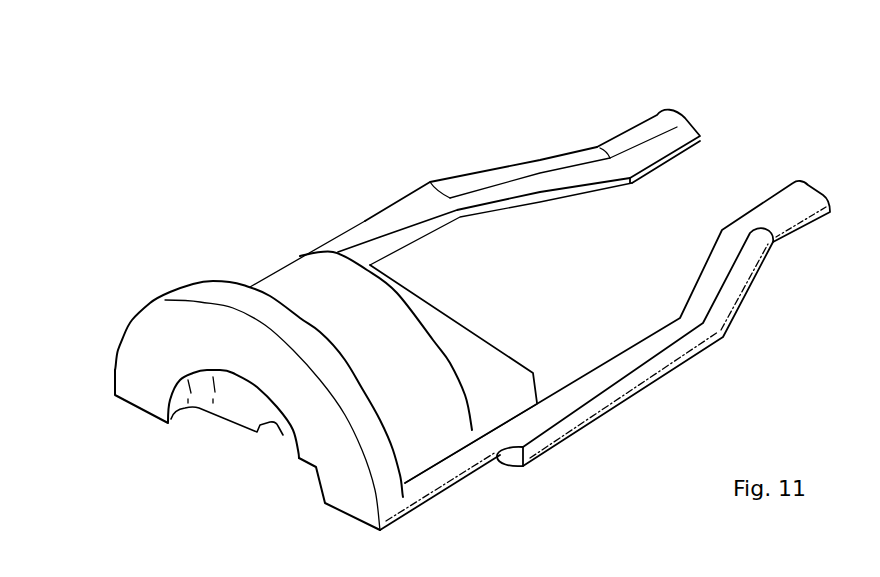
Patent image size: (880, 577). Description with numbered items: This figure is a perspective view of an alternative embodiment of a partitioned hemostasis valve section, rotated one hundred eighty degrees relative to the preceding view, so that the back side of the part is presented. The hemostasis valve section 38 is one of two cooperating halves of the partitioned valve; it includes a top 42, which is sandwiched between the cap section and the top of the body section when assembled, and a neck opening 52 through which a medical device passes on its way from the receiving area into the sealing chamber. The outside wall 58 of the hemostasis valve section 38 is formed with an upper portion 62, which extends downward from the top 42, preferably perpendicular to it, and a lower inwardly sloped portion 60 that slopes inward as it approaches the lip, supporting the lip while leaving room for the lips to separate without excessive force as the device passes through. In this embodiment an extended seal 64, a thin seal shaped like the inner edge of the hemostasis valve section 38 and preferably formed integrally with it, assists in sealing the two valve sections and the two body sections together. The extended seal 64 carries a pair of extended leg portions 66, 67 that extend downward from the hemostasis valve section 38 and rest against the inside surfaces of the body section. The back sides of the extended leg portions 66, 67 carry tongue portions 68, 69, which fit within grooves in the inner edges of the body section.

The hemostasis valve section 38 is at (120, 266).
The top 42 is at (144, 389).
The neck opening 52 is at (281, 437).
The outside wall 58 is at (492, 378).
The inwardly sloped portion 60 is at (453, 317).
The upper portion 62 is at (312, 288).
The extended seal 64 is at (547, 170).
The extended leg portion 66 is at (653, 147).
The extended leg portion 67 is at (782, 197).
The tongue portion 68 is at (575, 160).
The tongue portion 69 is at (727, 313).